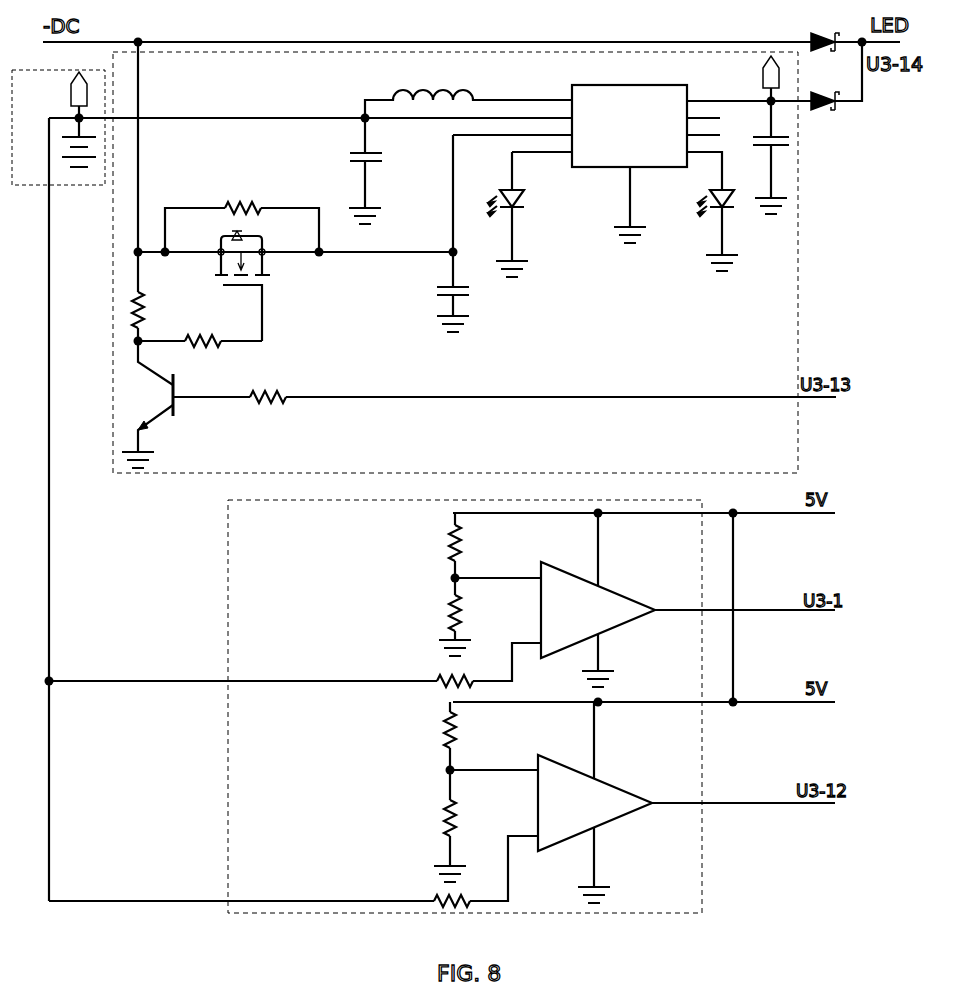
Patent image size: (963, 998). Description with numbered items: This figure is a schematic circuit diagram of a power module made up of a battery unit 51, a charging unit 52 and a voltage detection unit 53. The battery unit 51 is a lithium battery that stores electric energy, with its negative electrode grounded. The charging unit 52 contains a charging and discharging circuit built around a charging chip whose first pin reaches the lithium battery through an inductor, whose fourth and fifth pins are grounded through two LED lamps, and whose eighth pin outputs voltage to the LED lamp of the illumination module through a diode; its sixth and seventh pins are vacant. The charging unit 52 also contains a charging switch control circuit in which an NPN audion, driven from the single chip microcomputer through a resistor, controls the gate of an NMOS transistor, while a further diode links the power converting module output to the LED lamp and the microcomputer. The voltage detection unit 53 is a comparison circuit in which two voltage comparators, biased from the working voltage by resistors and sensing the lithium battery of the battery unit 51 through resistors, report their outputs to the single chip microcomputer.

The battery unit 51 is at (105, 185).
The charging unit 52 is at (798, 300).
The voltage detection unit 53 is at (702, 913).